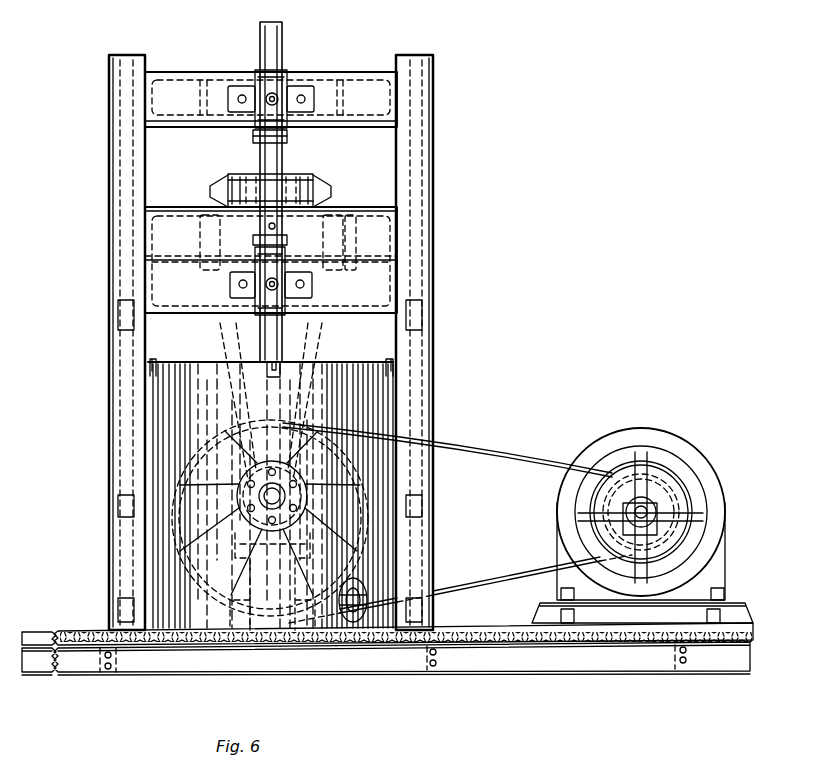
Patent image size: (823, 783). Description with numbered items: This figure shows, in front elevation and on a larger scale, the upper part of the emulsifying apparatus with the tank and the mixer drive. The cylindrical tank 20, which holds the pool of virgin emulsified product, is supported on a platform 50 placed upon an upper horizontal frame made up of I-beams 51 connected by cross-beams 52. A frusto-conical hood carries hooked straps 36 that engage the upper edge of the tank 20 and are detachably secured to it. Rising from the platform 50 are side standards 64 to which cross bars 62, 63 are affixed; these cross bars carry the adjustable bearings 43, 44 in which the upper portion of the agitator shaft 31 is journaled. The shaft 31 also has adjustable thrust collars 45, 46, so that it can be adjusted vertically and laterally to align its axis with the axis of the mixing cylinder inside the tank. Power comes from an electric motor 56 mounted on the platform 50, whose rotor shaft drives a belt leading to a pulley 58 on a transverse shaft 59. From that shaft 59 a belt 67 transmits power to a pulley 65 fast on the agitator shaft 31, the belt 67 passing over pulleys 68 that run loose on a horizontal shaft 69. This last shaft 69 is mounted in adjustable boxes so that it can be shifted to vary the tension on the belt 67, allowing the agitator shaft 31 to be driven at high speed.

The cylindrical tank or container 20 is at (173, 361).
The agitator shaft 31 is at (282, 40).
The hooked straps 36 is at (386, 359).
The adjustable bearing 43 is at (255, 92).
The adjustable bearing 44 is at (283, 319).
The adjustable thrust collar 45 is at (253, 133).
The adjustable thrust collar 46 is at (253, 238).
The platform 50 is at (61, 629).
The I-beam 51 is at (628, 657).
The cross-beam 52 is at (120, 658).
The electric motor 56 is at (712, 475).
The pulley 58 is at (268, 427).
The transverse shaft 59 is at (490, 456).
The cross bar 62 is at (360, 81).
The cross bar 63 is at (372, 267).
The side standard 64 is at (108, 344).
The pulley 65 is at (304, 179).
The belt 67 is at (218, 332).
The loose pulley 68 is at (210, 193).
The horizontal shaft 69 is at (350, 217).